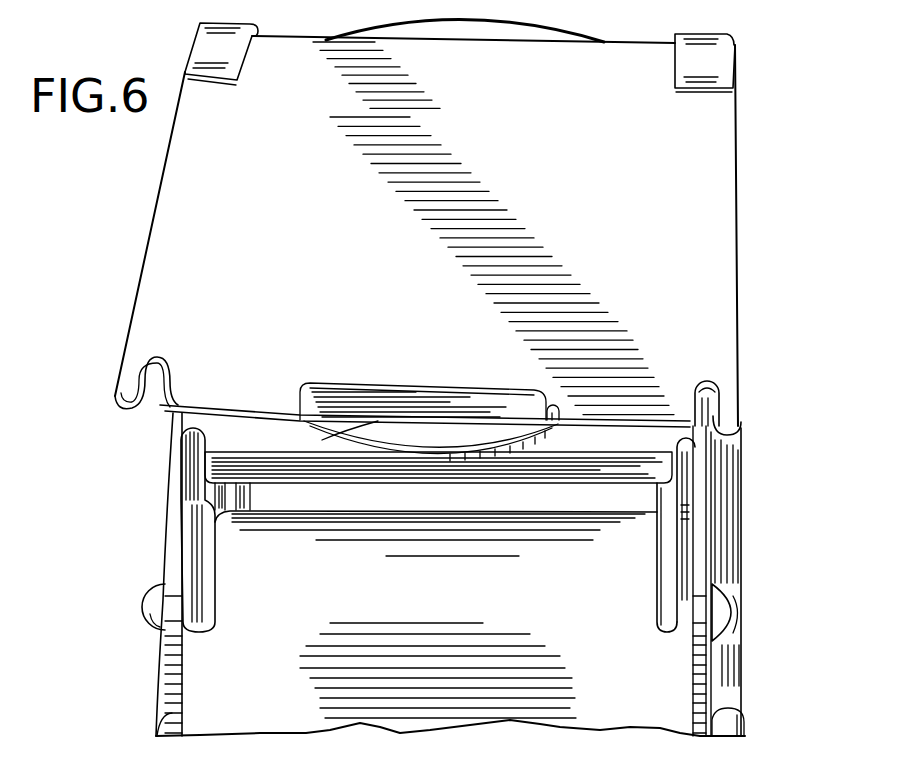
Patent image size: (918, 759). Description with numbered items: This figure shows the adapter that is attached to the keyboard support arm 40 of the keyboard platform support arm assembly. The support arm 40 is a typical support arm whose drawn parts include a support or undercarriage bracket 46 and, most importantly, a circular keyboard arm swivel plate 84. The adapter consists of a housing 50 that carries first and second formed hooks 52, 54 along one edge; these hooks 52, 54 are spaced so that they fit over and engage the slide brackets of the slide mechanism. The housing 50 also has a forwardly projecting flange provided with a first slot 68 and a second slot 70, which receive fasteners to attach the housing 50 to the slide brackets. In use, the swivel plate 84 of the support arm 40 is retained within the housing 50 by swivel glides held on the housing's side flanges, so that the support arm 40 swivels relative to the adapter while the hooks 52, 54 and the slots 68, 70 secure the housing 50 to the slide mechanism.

The keyboard support arm 40 is at (319, 624).
The support or undercarriage bracket 46 is at (162, 658).
The housing 50 is at (542, 147).
The first formed hook 52 is at (230, 56).
The second formed hook 54 is at (712, 70).
The first slot 68 is at (147, 392).
The second slot 70 is at (712, 420).
The keyboard arm swivel plate 84 is at (518, 32).